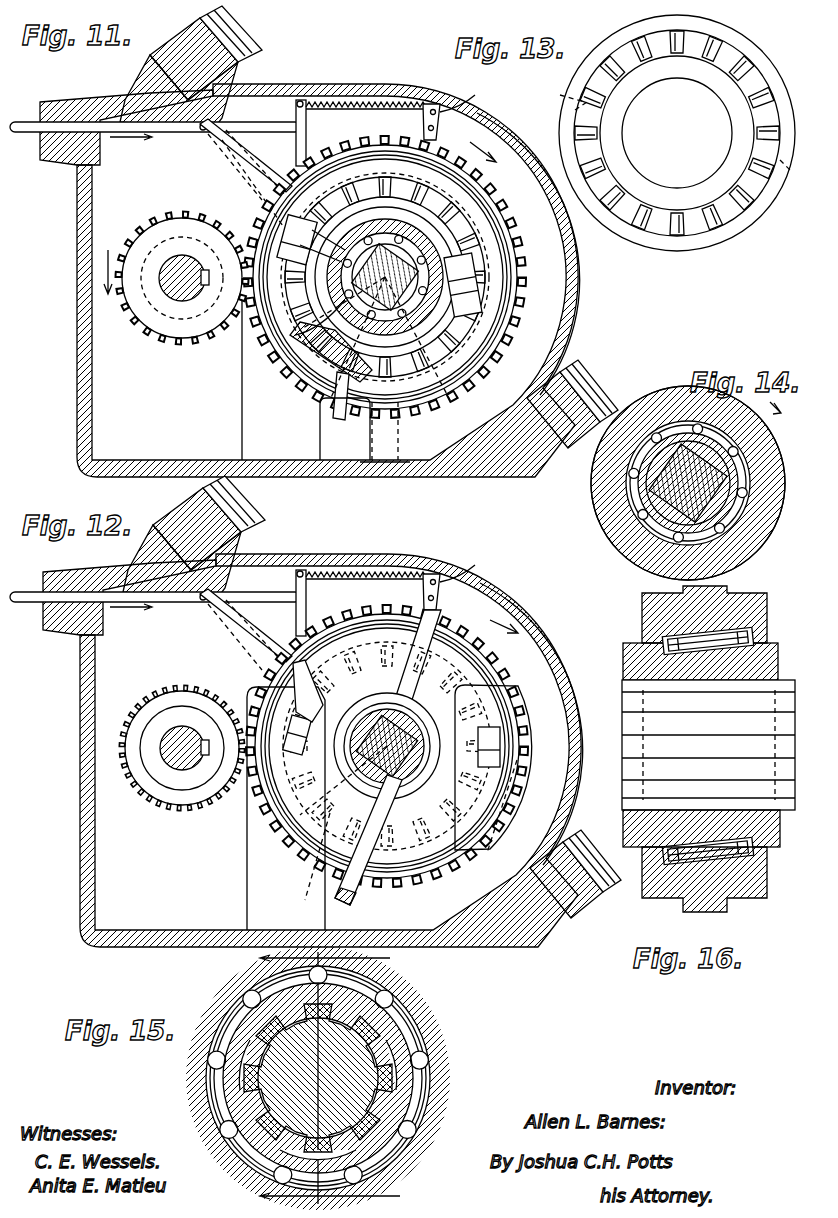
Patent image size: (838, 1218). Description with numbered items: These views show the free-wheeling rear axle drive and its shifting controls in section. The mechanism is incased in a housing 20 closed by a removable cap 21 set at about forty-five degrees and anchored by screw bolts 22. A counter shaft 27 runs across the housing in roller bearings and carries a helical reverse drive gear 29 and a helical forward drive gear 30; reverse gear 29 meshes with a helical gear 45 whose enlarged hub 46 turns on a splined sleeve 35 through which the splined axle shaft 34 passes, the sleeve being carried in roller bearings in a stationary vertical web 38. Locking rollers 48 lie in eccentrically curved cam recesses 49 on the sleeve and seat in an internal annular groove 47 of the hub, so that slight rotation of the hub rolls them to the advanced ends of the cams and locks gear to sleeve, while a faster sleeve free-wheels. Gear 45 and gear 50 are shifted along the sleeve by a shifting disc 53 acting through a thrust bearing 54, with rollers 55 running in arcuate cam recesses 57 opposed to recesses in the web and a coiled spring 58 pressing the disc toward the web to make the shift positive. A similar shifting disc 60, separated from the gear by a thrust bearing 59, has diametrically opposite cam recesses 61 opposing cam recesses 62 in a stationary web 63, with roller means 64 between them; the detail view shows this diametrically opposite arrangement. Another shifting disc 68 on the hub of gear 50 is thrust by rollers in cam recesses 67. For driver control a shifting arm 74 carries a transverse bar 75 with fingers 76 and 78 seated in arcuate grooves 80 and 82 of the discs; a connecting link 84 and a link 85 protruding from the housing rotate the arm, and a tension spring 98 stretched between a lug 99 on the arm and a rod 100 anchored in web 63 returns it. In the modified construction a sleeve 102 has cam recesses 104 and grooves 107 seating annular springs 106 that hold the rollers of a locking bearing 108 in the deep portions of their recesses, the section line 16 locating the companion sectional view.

In FIG. 11, the housing 20 is at (69, 440).
In FIG. 12, the housing 20 is at (72, 864).
In FIG. 11, the removable cap 21 is at (570, 312).
In FIG. 12, the removable cap 21 is at (560, 626).
In FIG. 11, the screw bolts 22 is at (215, 45).
In FIG. 12, the screw bolts 22 is at (218, 516).
In FIG. 11, the counter shaft 27 is at (176, 290).
In FIG. 12, the counter shaft 27 is at (182, 770).
In FIG. 11, the helical reverse drive gear 29 is at (142, 248).
In FIG. 12, the helical forward drive gear 30 is at (140, 792).
In FIG. 11, the axle shaft 34 is at (408, 300).
In FIG. 14, the axle shaft 34 is at (725, 486).
In FIG. 12, the axle shaft 34 is at (400, 775).
In FIG. 16, the axle shaft 34 is at (780, 722).
In FIG. 15, the axle shaft 34 is at (250, 1068).
In FIG. 11, the splined sleeve 35 is at (330, 292).
In FIG. 14, the splined sleeve 35 is at (640, 478).
In FIG. 12, the splined sleeve 35 is at (368, 790).
In FIG. 11, the stationary member or vertical web 38 is at (382, 463).
In FIG. 11, the helical gear 45 is at (332, 300).
In FIG. 11, the enlarged hub 46 is at (340, 292).
In FIG. 14, the enlarged hub 46 is at (748, 462).
In FIG. 14, the internal annular groove 47 is at (735, 502).
In FIG. 11, the locking rollers 48 is at (384, 320).
In FIG. 14, the locking rollers 48 is at (625, 508).
In FIG. 11, the cam recesses 49 is at (400, 316).
In FIG. 14, the cam recesses 49 is at (658, 440).
In FIG. 12, the gear 50 is at (500, 672).
In FIG. 11, the shifting disc 53 is at (500, 306).
In FIG. 11, the thrust bearing 54 is at (462, 222).
In FIG. 11, the rollers 55 is at (318, 280).
In FIG. 11, the arcuate cam recesses 57 is at (381, 269).
In FIG. 11, the coiled spring 58 is at (470, 268).
In FIG. 13, the thrust bearing 59 is at (735, 62).
In FIG. 13, the shifting disc 60 is at (755, 52).
In FIG. 14, the shifting disc 60 is at (680, 394).
In FIG. 13, the arcuate cam recesses 61 is at (572, 108).
In FIG. 12, the arcuate cam recesses 62 is at (500, 738).
In FIG. 11, the stationary member or web 63 is at (246, 440).
In FIG. 12, the stationary member or web 63 is at (528, 812).
In FIG. 12, the roller means 64 is at (374, 712).
In FIG. 12, the cam recesses 67 is at (295, 672).
In FIG. 12, the shifting disc 68 is at (450, 672).
In FIG. 11, the shifting arm 74 is at (440, 122).
In FIG. 12, the shifting arm 74 is at (440, 592).
In FIG. 11, the transverse bar 75 is at (359, 429).
In FIG. 12, the transverse bar 75 is at (343, 904).
In FIG. 11, the finger 76 is at (334, 400).
In FIG. 12, the finger 78 is at (440, 878).
In FIG. 11, the arcuate groove 80 is at (330, 352).
In FIG. 12, the arcuate groove 82 is at (405, 832).
In FIG. 11, the connecting link 84 is at (302, 100).
In FIG. 12, the connecting link 84 is at (276, 600).
In FIG. 11, the link 85 is at (30, 134).
In FIG. 12, the link 85 is at (30, 604).
In FIG. 11, the tension spring 98 is at (398, 104).
In FIG. 12, the tension spring 98 is at (396, 574).
In FIG. 11, the lug 99 is at (452, 102).
In FIG. 12, the lug 99 is at (456, 575).
In FIG. 11, the rod 100 is at (296, 102).
In FIG. 12, the rod 100 is at (296, 572).
In FIG. 15, the modified sleeve 102 is at (420, 1040).
In FIG. 16, the cam recesses 104 is at (772, 836).
In FIG. 15, the cam recesses 104 is at (400, 1090).
In FIG. 16, the annular springs 106 is at (768, 615).
In FIG. 15, the annular springs 106 is at (400, 1000).
In FIG. 15, the grooves 107 is at (245, 1002).
In FIG. 16, the locking bearing 108 is at (768, 878).
In FIG. 15, the locking bearing 108 is at (412, 1050).
In FIG. 15, the section line 16 is at (342, 1077).